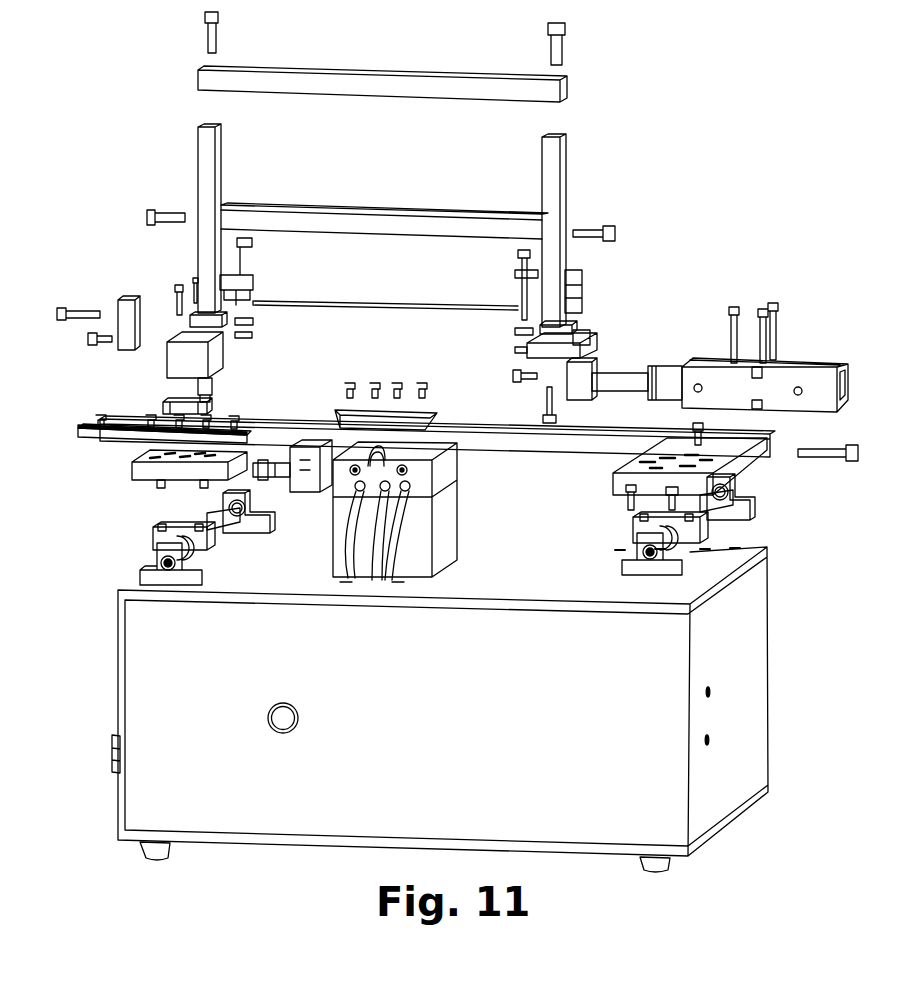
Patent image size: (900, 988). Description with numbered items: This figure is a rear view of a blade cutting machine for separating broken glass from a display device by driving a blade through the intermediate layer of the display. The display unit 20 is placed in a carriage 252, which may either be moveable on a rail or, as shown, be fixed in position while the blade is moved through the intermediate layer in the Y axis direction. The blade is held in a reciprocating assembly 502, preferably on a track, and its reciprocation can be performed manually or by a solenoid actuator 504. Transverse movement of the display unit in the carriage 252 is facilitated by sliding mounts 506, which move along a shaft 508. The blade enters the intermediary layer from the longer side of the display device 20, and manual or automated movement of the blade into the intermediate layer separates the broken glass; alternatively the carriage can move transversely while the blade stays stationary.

The reciprocating assembly 502 is at (128, 160).
The solenoid actuator 504 is at (618, 370).
The display unit 20 is at (425, 412).
The carriage 252 is at (440, 448).
The sliding mounts 506 is at (155, 540).
The shaft 508 is at (232, 520).